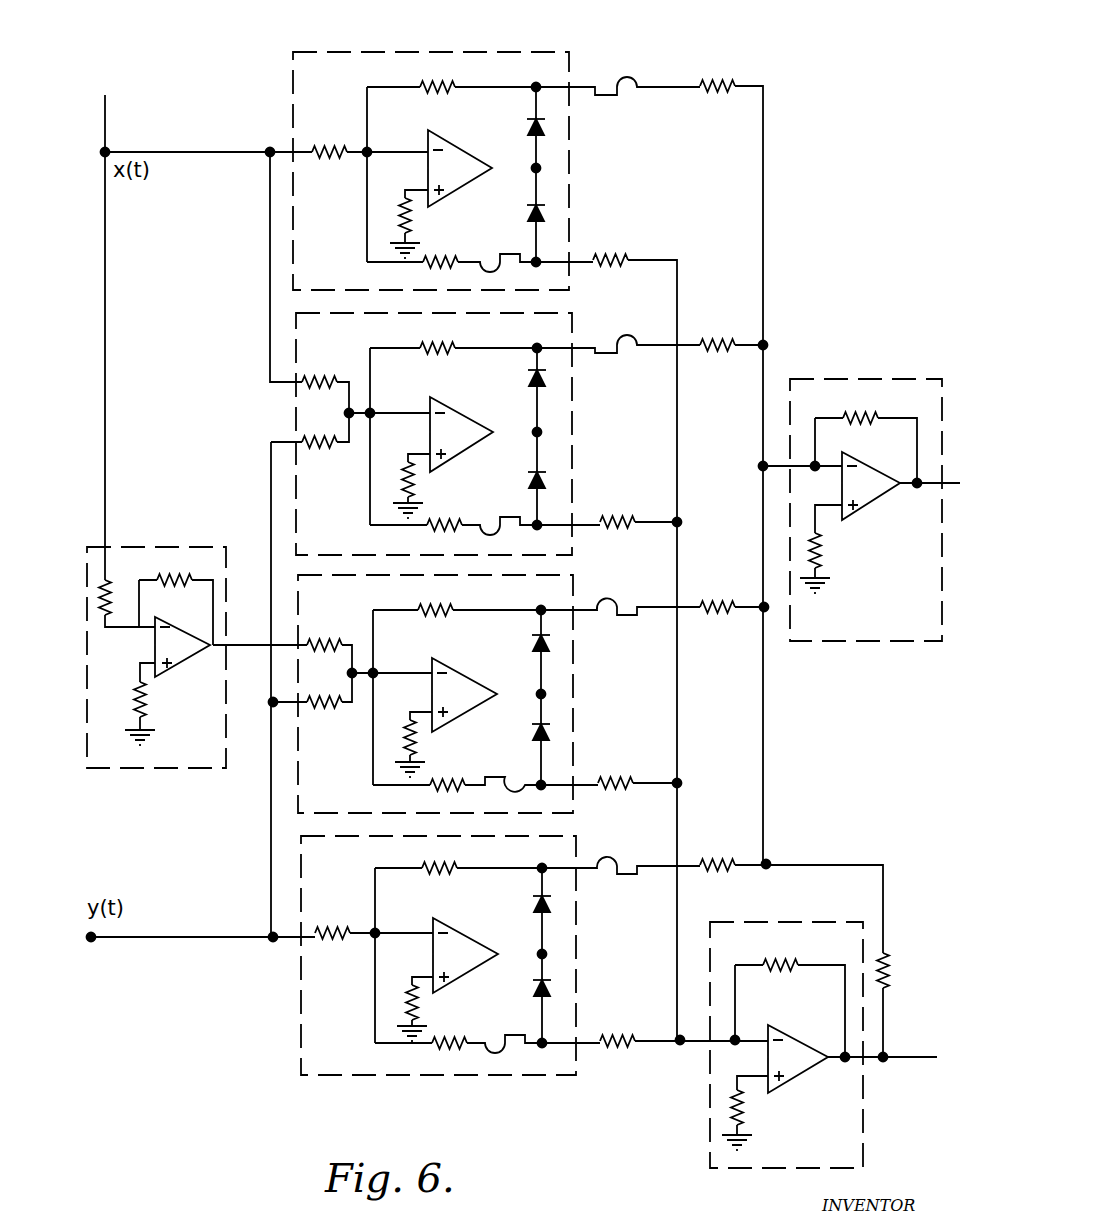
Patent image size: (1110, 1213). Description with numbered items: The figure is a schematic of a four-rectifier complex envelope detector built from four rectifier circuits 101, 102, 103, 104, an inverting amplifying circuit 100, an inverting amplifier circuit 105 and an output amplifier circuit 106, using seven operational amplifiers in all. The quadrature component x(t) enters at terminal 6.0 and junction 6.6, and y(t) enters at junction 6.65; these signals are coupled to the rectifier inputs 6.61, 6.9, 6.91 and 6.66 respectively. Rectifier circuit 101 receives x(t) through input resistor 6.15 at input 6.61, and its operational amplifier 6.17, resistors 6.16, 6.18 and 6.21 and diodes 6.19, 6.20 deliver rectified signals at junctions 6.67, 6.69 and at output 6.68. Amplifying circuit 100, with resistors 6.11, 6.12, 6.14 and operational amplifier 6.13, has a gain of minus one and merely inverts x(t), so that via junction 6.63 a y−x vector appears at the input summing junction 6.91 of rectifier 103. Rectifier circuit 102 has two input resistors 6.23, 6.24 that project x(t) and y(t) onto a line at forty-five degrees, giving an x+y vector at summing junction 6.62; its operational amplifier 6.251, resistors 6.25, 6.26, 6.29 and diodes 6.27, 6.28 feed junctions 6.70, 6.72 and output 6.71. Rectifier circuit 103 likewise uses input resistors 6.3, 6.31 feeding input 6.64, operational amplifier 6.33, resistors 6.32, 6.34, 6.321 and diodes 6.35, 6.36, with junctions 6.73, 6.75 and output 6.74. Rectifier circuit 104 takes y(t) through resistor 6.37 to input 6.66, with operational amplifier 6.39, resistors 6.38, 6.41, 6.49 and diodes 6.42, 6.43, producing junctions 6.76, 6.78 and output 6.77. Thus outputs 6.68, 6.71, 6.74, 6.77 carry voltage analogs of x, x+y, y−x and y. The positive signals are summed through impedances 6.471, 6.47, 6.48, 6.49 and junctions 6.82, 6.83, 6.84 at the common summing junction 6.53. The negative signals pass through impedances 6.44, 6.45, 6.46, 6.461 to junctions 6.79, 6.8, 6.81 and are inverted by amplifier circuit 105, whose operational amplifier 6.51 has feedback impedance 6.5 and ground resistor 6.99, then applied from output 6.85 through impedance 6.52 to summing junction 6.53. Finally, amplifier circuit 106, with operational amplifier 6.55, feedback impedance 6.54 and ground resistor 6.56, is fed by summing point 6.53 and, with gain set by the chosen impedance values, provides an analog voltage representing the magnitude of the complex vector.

The amplifying circuit 100 is at (180, 547).
The rectifier circuit 101 is at (290, 55).
The rectifier circuit 102 is at (294, 346).
The rectifier circuit 103 is at (297, 800).
The rectifier circuit 104 is at (301, 1007).
The amplifier circuit 105 is at (797, 922).
The amplifier circuit 106 is at (872, 379).
The input terminal x(t) 6.0 is at (108, 148).
The junction 6.6 is at (268, 150).
The input 6.9 is at (349, 413).
The input summing junction 6.91 is at (352, 673).
The junction 6.63 is at (273, 706).
The junction 6.65 is at (272, 940).
The impedance 6.11 is at (108, 575).
The impedance 6.12 is at (173, 580).
The operational amplifier 6.13 is at (185, 640).
The impedance 6.14 is at (143, 700).
The impedance 6.15 is at (325, 150).
The impedance 6.16 is at (420, 87).
The operational amplifier 6.17 is at (462, 155).
The impedance 6.18 is at (405, 215).
The diode 6.19 is at (546, 127).
The diode 6.20 is at (546, 210).
The impedance 6.21 is at (440, 262).
The input 6.61 is at (367, 150).
The junction 6.67 is at (536, 85).
The output 6.68 is at (540, 166).
The junction 6.69 is at (540, 258).
The impedance 6.44 is at (618, 258).
The impedance 6.471 is at (716, 85).
The impedance 6.47 is at (716, 344).
The impedance 6.45 is at (615, 524).
The impedance 6.46 is at (615, 785).
The impedance 6.461 is at (616, 1044).
The impedance 6.48 is at (716, 606).
The impedance 6.49 is at (400, 995).
The input resistor 6.23 is at (318, 380).
The input resistor 6.24 is at (318, 444).
The impedance 6.25 is at (432, 348).
The operational amplifier 6.251 is at (465, 418).
The impedance 6.26 is at (408, 475).
The diode 6.27 is at (547, 385).
The diode 6.28 is at (547, 478).
The impedance 6.29 is at (440, 525).
The summing junction 6.62 is at (370, 411).
The junction 6.70 is at (537, 346).
The output 6.71 is at (541, 430).
The junction 6.72 is at (541, 522).
The input resistor 6.3 is at (322, 643).
The input resistor 6.31 is at (322, 704).
The impedance 6.32 is at (430, 610).
The operational amplifier 6.33 is at (465, 675).
The impedance 6.34 is at (400, 740).
The diode 6.35 is at (550, 648).
The diode 6.36 is at (550, 735).
The impedance 6.321 is at (450, 785).
The junction 6.64 is at (373, 671).
The junction 6.73 is at (541, 608).
The output 6.74 is at (545, 692).
The junction 6.75 is at (545, 782).
The impedance 6.37 is at (328, 931).
The impedance 6.38 is at (430, 868).
The operational amplifier 6.39 is at (470, 935).
The impedance 6.41 is at (452, 1043).
The diode 6.42 is at (551, 910).
The diode 6.43 is at (551, 992).
The input 6.66 is at (375, 931).
The junction 6.76 is at (542, 866).
The output 6.77 is at (546, 952).
The junction 6.78 is at (546, 1040).
The junction 6.79 is at (679, 520).
The junction 6.8 is at (679, 781).
The junction 6.81 is at (680, 1045).
The junction 6.82 is at (765, 343).
The junction 6.83 is at (762, 610).
The junction 6.84 is at (768, 862).
The output terminal 6.85 is at (885, 1060).
The summing junction 6.53 is at (763, 466).
The impedance 6.52 is at (884, 955).
The impedance 6.54 is at (858, 418).
The operational amplifier 6.55 is at (878, 500).
The impedance 6.56 is at (820, 555).
The impedance 6.5 is at (775, 965).
The operational amplifier 6.51 is at (785, 1030).
The impedance 6.99 is at (748, 1102).